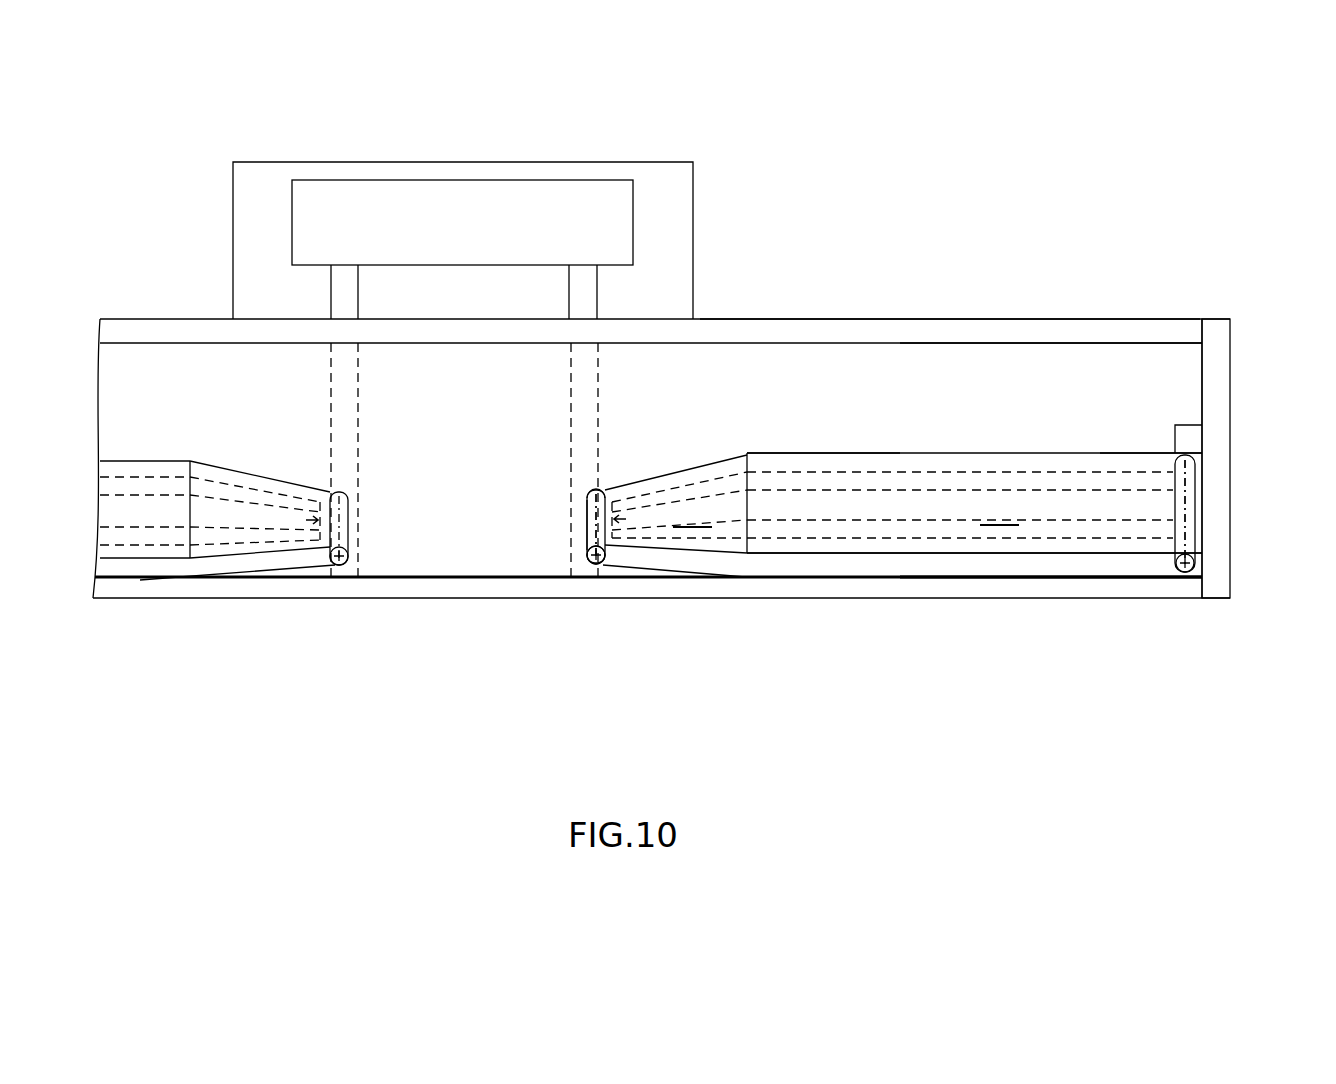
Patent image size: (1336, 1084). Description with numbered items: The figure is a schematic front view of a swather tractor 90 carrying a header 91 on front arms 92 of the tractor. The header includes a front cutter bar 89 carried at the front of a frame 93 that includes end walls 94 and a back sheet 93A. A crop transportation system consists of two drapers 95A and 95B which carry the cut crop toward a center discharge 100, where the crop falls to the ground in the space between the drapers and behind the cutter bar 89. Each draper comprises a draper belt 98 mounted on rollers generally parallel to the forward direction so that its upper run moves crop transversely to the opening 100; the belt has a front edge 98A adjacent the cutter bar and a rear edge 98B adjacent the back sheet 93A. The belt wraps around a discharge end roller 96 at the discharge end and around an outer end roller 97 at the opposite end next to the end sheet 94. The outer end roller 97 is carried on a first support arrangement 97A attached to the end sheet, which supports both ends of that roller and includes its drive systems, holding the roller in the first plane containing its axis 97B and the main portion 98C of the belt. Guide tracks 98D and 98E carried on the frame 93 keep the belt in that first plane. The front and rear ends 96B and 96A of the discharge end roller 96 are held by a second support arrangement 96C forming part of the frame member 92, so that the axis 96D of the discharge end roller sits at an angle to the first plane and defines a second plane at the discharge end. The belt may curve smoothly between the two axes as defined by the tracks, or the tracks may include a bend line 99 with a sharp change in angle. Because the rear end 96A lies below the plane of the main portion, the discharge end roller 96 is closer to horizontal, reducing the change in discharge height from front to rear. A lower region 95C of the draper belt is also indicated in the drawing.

The front cutter bar 89 is at (855, 582).
The swather tractor 90 is at (725, 286).
The header 91 is at (818, 304).
The front arms 92 is at (580, 368).
The frame 93 is at (953, 328).
The back sheet 93A is at (1097, 357).
The end wall 94 is at (1215, 347).
The draper 95A is at (240, 560).
The draper 95B is at (808, 562).
The bottom wall of chamber 95C is at (892, 543).
The discharge end roller 96 is at (592, 563).
The rear end of discharge end roller 96A is at (588, 490).
The front end of discharge end roller 96B is at (587, 557).
The second support arrangement 96C is at (578, 522).
The axis of discharge end roller 96D is at (600, 530).
The outer end roller 97 is at (1185, 575).
The first support arrangement 97A is at (1190, 437).
The axis of outer end roller 97B is at (1185, 508).
The draper belt 98 is at (872, 478).
The front edge of draper belt 98A is at (1007, 565).
The rear edge of draper belt 98B is at (1105, 462).
The main portion of belt 98C is at (943, 480).
The guide track 98D is at (1143, 478).
The guide track 98E is at (1110, 527).
The bend line 99 is at (747, 510).
The center discharge 100 is at (403, 543).